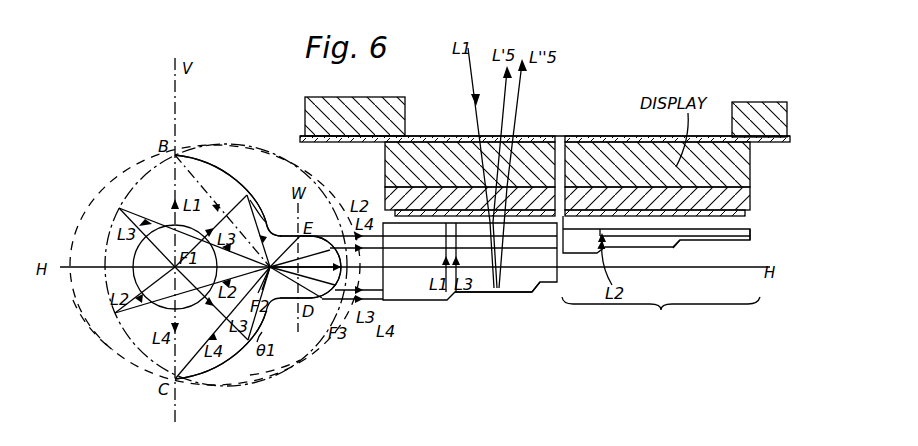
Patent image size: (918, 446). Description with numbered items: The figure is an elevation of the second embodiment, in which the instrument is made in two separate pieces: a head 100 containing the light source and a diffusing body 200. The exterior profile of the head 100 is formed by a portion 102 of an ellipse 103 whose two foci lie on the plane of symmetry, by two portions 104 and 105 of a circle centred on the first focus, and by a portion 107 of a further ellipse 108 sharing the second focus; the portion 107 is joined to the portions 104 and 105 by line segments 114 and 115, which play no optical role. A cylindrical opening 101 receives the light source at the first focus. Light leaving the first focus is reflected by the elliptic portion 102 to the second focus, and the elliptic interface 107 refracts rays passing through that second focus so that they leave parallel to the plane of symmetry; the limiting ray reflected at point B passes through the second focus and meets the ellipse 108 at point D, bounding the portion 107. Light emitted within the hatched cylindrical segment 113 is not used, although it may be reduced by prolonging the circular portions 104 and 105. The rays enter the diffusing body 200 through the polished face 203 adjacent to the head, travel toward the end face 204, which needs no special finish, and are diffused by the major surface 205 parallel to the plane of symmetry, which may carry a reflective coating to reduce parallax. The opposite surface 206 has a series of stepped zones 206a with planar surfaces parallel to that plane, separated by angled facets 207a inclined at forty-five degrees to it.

The head 100 is at (187, 384).
The cylindrical opening 101 is at (75, 289).
The elliptic portion 102 is at (112, 220).
The ellipse 103 is at (284, 374).
The circular portion 104 is at (235, 379).
The circular portion 105 is at (237, 177).
The elliptic interface portion 107 is at (322, 234).
The further ellipse 108 is at (263, 231).
The cylindrical segment 113 is at (112, 351).
The line segment 114 is at (291, 301).
The line segment 115 is at (287, 234).
The diffusing body 200 is at (522, 260).
The entry face 203 is at (378, 278).
The end face 204 is at (764, 235).
The major surface 205 is at (668, 219).
The stepped surface 206 is at (661, 275).
The stepped zones 206a is at (497, 294).
The angled facets 207a is at (536, 289).